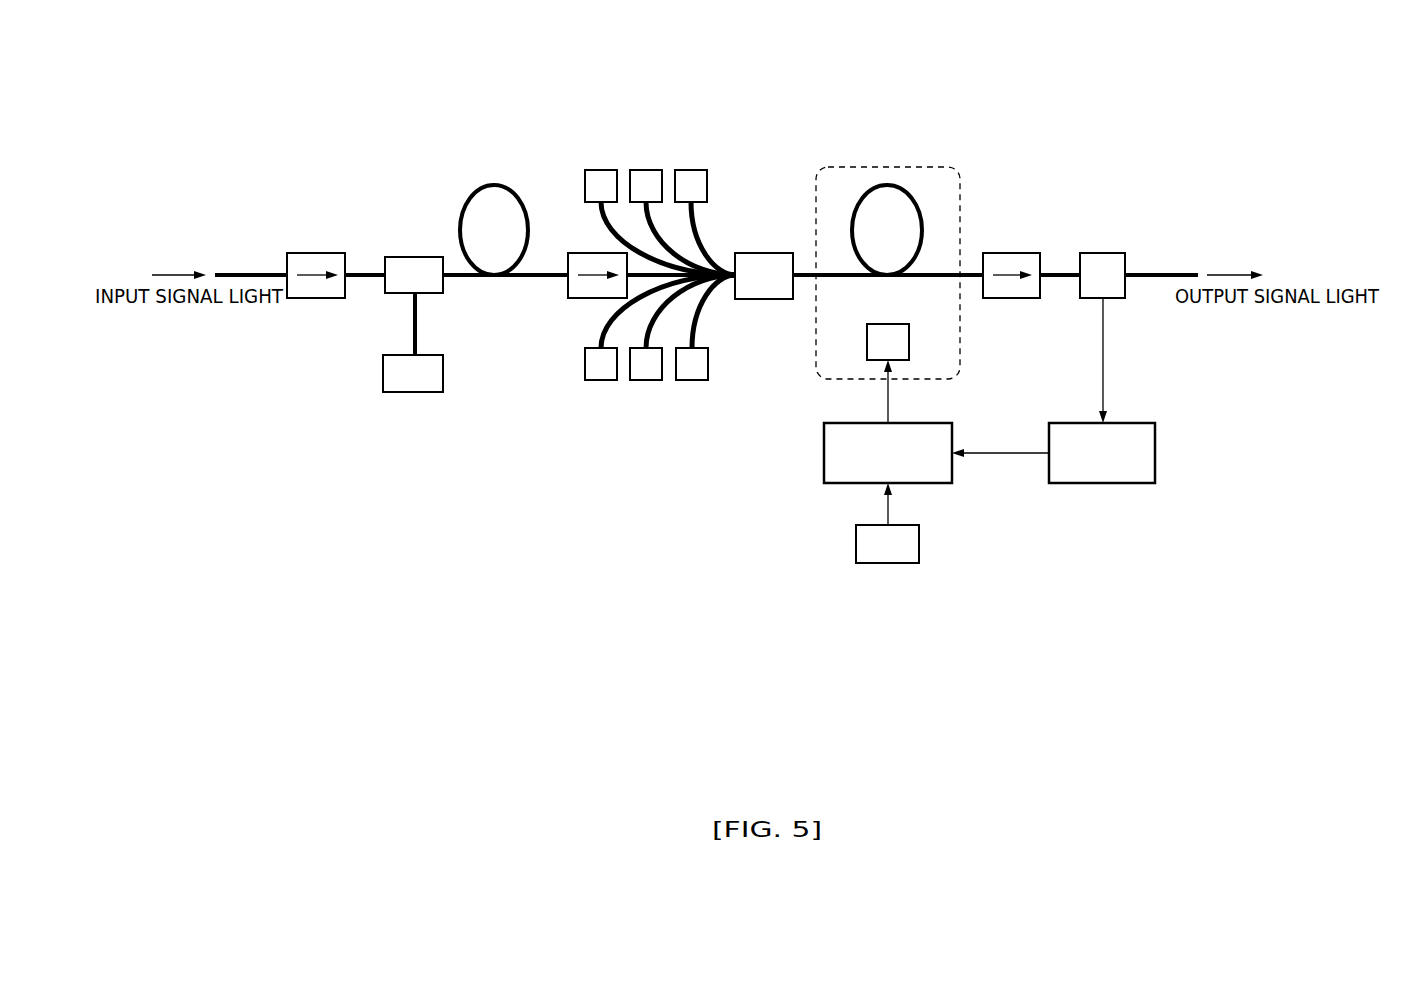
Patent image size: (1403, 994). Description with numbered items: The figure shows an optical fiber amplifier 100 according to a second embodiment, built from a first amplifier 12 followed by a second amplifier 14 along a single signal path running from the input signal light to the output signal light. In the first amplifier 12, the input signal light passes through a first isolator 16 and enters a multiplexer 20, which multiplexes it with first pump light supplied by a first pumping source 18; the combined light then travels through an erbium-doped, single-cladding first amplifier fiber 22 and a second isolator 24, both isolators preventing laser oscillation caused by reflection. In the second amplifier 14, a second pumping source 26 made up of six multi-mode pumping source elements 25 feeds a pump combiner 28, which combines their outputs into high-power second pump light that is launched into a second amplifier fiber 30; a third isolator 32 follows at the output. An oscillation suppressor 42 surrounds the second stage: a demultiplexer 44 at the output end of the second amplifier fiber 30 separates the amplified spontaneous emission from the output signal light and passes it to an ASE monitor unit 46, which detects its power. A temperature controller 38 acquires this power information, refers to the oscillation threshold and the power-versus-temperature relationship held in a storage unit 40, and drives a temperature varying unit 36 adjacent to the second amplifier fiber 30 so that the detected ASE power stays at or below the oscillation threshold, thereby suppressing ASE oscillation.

The first amplifier 12 is at (462, 147).
The second amplifier 14 is at (786, 147).
The first isolator 16 is at (317, 252).
The first pumping source 18 is at (414, 393).
The multiplexer 20 is at (417, 256).
The first amplifier fiber 22 is at (496, 185).
The second isolator 24 is at (580, 252).
The pumping source element 25 is at (602, 169).
The second pumping source 26 is at (632, 402).
The pump combiner 28 is at (765, 252).
The second amplifier fiber 30 is at (888, 185).
The third isolator 32 is at (1012, 252).
The temperature varying unit 36 is at (867, 335).
The temperature controller 38 is at (824, 452).
The storage unit 40 is at (856, 540).
The oscillation suppressor 42 is at (1025, 538).
The demultiplexer 44 is at (1102, 252).
The ASE monitor unit 46 is at (1155, 449).
The optical fiber amplifier 100 is at (568, 581).